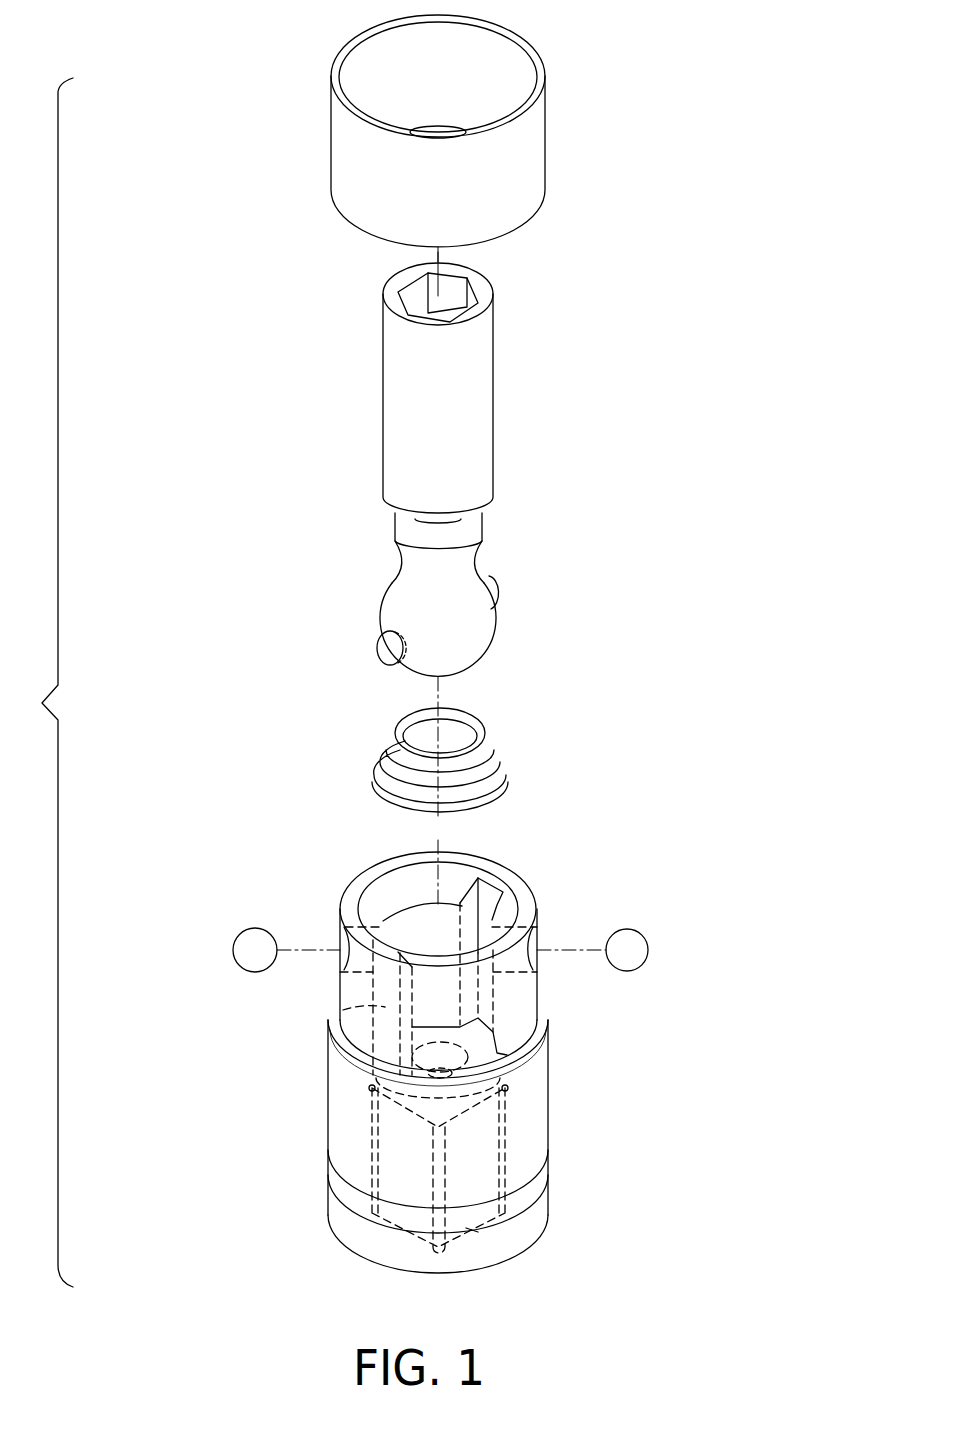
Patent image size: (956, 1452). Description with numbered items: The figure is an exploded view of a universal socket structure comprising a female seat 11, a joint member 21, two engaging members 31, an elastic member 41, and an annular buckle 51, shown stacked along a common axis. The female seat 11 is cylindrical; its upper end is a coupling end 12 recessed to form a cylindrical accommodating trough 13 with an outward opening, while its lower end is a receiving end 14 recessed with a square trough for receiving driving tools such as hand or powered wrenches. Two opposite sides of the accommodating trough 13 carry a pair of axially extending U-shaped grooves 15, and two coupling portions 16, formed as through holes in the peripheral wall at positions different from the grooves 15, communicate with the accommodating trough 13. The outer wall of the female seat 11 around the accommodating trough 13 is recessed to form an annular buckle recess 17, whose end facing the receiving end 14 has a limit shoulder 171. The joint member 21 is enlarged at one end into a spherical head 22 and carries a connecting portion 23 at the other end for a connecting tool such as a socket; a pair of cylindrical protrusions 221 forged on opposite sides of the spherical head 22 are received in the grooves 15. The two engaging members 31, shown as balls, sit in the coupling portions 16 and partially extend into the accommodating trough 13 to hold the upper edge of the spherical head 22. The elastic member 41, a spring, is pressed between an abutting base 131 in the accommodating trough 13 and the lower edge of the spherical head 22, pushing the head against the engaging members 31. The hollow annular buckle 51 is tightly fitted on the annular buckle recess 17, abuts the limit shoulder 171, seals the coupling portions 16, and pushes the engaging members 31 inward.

The female seat 11 is at (458, 1062).
The coupling end 12 is at (368, 875).
The accommodating trough 13 is at (420, 917).
The abutting base 131 is at (503, 1060).
The receiving end 14 is at (472, 1232).
The grooves 15 is at (483, 895).
The coupling portions 16 is at (338, 947).
The annular buckle recess 17 is at (515, 993).
The limit shoulder 171 is at (547, 1020).
The joint member 21 is at (485, 422).
The spherical head 22 is at (439, 620).
The protrusions 221 is at (490, 578).
The connecting portion 23 is at (487, 292).
The engaging members 31 is at (248, 940).
The elastic member 41 is at (490, 748).
The annular buckle 51 is at (533, 153).